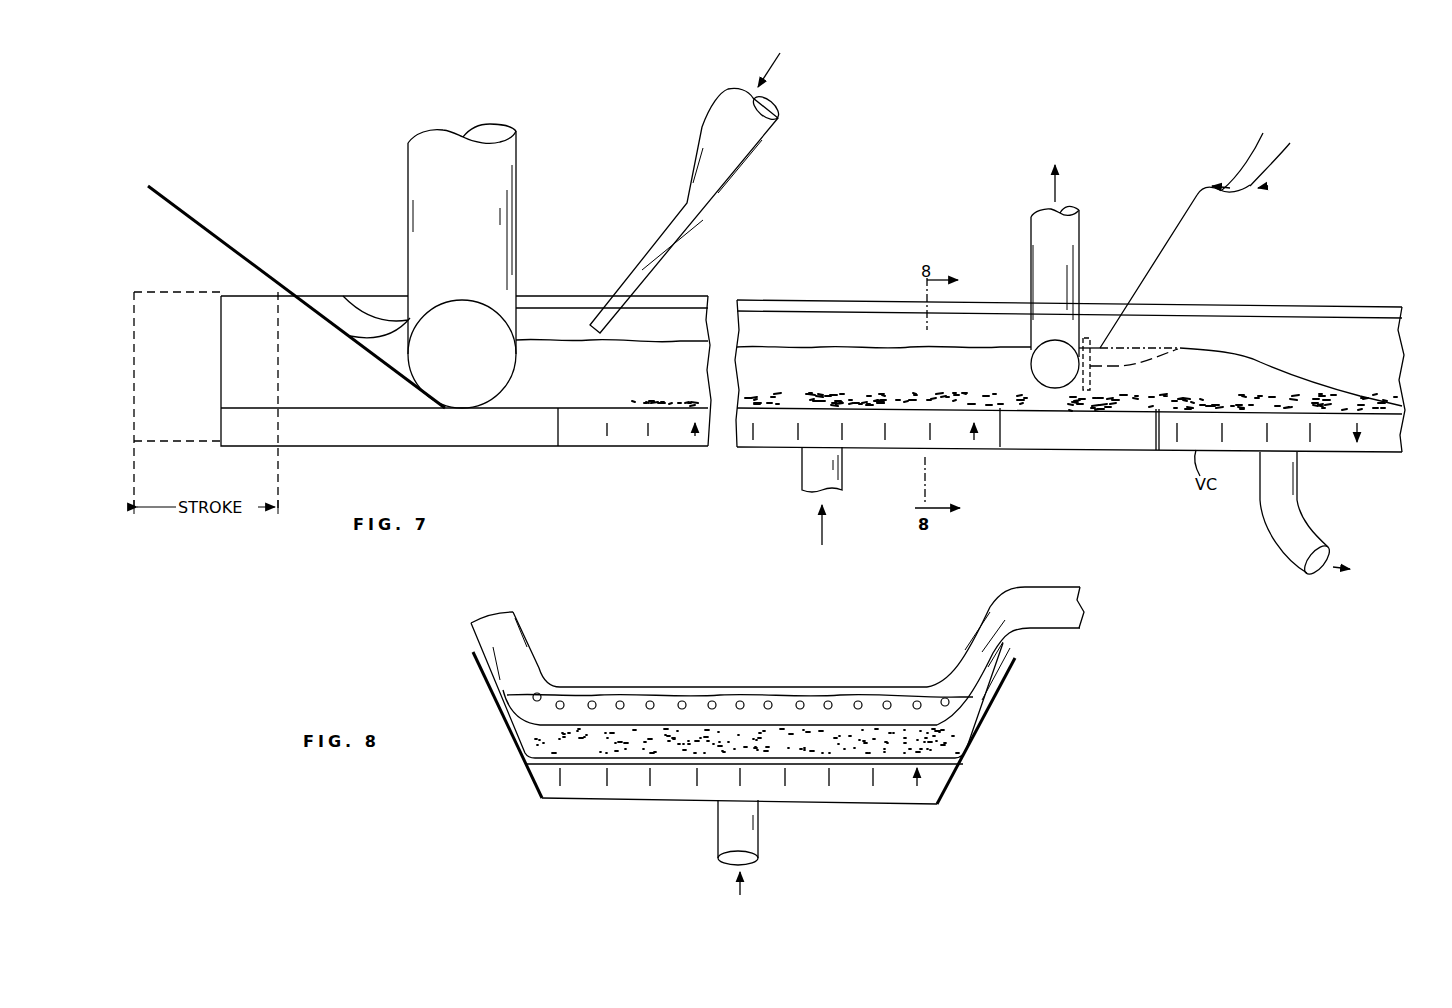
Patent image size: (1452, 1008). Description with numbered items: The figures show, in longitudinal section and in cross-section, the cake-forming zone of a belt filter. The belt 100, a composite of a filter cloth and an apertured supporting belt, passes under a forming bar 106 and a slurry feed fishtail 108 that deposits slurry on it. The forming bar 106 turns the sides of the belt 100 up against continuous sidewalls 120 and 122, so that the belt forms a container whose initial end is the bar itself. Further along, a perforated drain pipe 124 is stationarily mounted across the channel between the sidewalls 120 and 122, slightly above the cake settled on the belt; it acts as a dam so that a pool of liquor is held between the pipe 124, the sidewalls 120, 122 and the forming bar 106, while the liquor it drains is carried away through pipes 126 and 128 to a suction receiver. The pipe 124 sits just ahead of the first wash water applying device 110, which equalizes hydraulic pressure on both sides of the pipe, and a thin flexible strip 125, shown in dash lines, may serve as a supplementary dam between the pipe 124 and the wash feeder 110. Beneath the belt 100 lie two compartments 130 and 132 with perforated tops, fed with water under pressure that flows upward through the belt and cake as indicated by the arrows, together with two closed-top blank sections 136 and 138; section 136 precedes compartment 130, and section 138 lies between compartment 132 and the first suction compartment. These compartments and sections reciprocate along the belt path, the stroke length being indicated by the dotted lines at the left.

In FIG. 7, the belt 100 is at (339, 330).
In FIG. 8, the belt 100 is at (522, 750).
In FIG. 7, the forming bar 106 is at (471, 200).
In FIG. 7, the slurry feed fishtail 108 is at (768, 160).
In FIG. 7, the first wash water applying device 110 is at (1270, 188).
In FIG. 8, the sidewall 120 is at (1010, 663).
In FIG. 7, the sidewall 122 is at (380, 296).
In FIG. 8, the sidewall 122 is at (473, 660).
In FIG. 7, the perforated drain pipe 124 is at (1070, 373).
In FIG. 8, the perforated drain pipe 124 is at (710, 683).
In FIG. 7, the thin flexible strip 125 is at (1168, 351).
In FIG. 8, the pipe 126 is at (1012, 610).
In FIG. 7, the pipe 128 is at (1073, 236).
In FIG. 8, the pipe 128 is at (502, 630).
In FIG. 7, the compartment 130 is at (633, 448).
In FIG. 7, the compartment 132 is at (880, 448).
In FIG. 8, the compartment 132 is at (863, 804).
In FIG. 7, the blank section 136 is at (438, 434).
In FIG. 7, the blank section 138 is at (1081, 442).